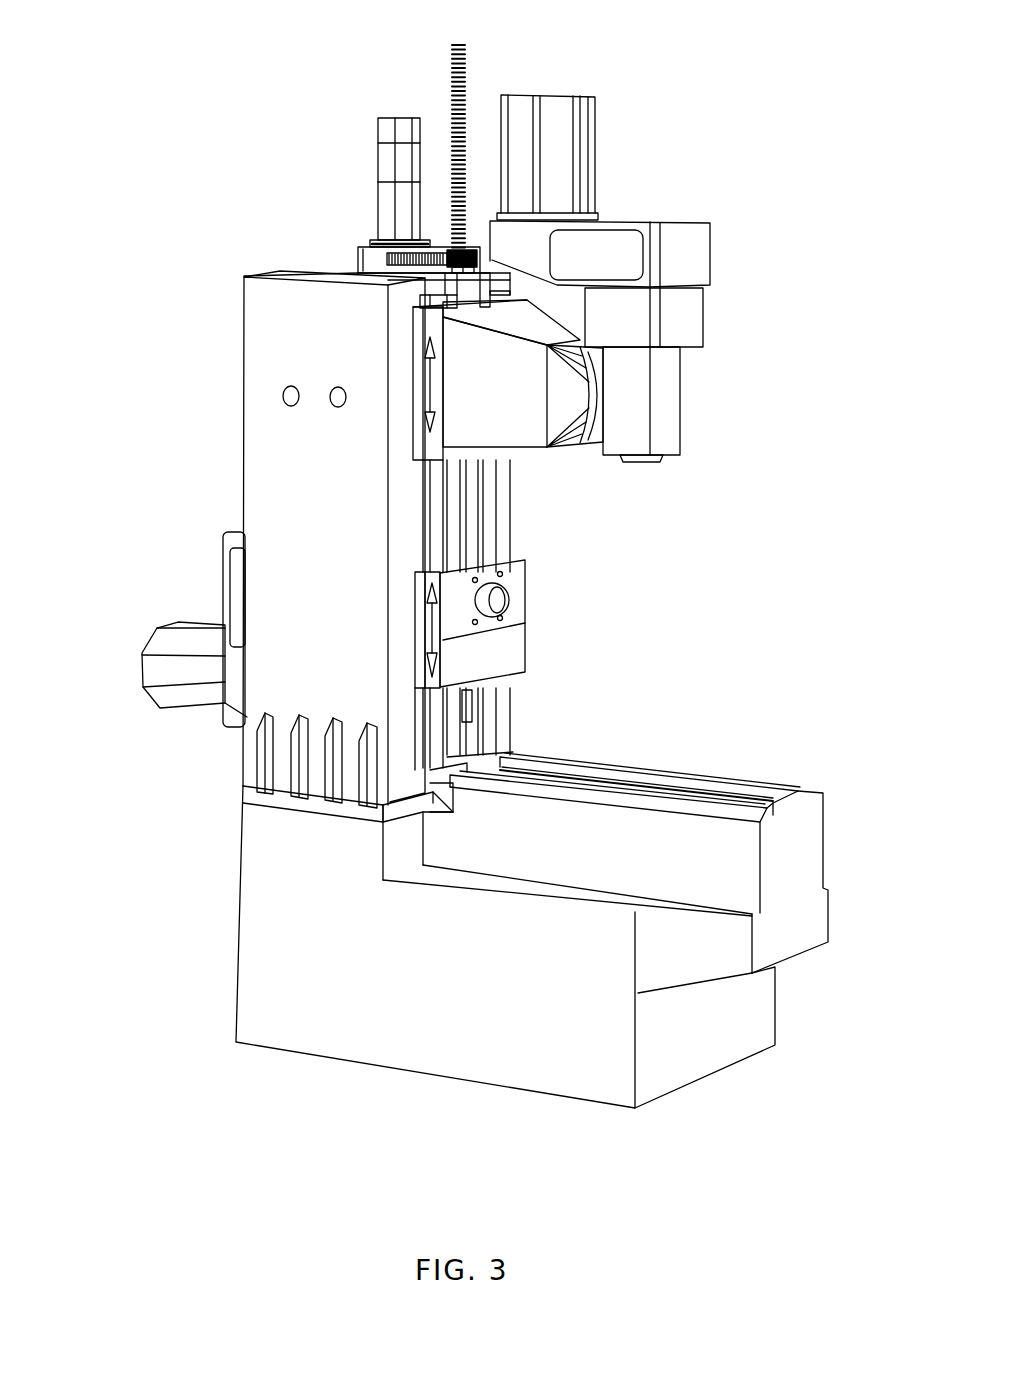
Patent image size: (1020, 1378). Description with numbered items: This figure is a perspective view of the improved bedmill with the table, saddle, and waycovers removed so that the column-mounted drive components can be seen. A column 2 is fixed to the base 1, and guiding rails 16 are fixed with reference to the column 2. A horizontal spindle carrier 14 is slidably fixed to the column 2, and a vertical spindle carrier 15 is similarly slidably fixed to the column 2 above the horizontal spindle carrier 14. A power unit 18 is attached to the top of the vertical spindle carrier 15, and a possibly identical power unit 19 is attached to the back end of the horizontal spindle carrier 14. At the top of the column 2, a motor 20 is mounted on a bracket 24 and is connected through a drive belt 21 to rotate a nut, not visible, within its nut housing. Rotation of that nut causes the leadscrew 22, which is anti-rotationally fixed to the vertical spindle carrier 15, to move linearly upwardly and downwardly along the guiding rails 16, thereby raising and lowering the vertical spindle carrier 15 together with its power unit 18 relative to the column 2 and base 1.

The base 1 is at (780, 1036).
The column 2 is at (243, 344).
The horizontal spindle carrier 14 is at (525, 612).
The vertical spindle carrier 15 is at (683, 428).
The guiding rails 16 is at (446, 556).
The power unit 18 is at (718, 271).
The power unit 19 is at (172, 625).
The motor 20 is at (375, 125).
The drive belt 21 is at (443, 247).
The leadscrew 22 is at (464, 86).
The bracket 24 is at (353, 252).